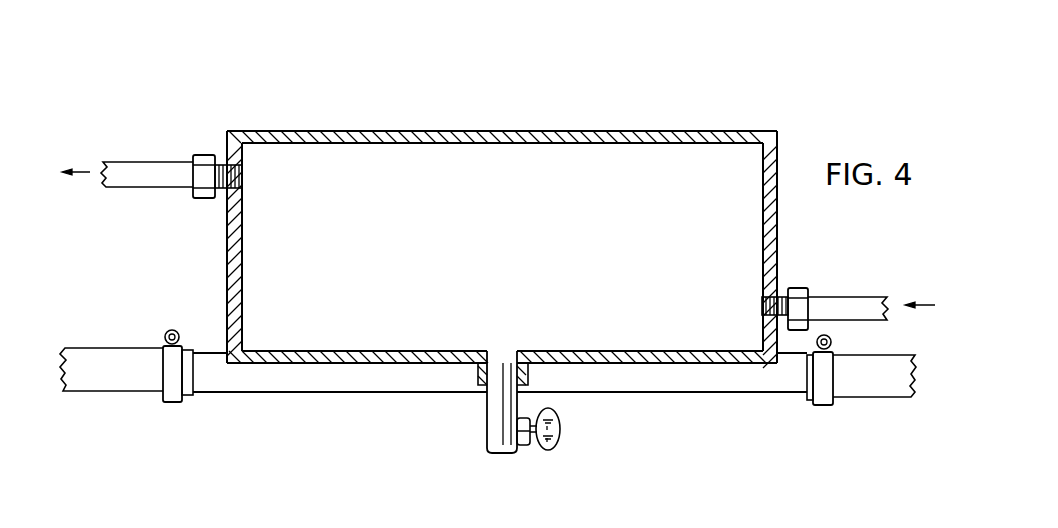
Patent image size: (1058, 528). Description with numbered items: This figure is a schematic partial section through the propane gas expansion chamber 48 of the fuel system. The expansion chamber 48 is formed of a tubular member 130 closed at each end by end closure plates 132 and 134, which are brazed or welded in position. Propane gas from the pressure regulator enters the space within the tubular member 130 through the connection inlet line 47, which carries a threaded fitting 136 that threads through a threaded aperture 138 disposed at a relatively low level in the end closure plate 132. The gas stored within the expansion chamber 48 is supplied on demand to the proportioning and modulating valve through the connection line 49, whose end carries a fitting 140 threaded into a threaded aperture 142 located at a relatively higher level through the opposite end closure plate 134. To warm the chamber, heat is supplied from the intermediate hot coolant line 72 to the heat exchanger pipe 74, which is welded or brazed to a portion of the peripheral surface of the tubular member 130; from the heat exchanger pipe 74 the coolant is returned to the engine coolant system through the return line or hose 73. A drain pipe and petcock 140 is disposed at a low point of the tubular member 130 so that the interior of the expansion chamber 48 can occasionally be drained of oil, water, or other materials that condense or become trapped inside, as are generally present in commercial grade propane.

The connection inlet line 47 is at (855, 305).
The propane gas expansion chamber 48 is at (368, 130).
The connection line 49 is at (157, 148).
The intermediate hot coolant line 72 is at (878, 390).
The return line or hose 73 is at (96, 362).
The heat exchanger pipe 74 is at (639, 382).
The tubular member 130 is at (526, 131).
The end closure plate 132 is at (763, 205).
The end closure plate 134 is at (242, 244).
The threaded fitting 136 is at (800, 288).
The threaded aperture 138 is at (762, 309).
The fitting / drain pipe and petcock 140 is at (208, 155).
The threaded aperture 142 is at (244, 179).